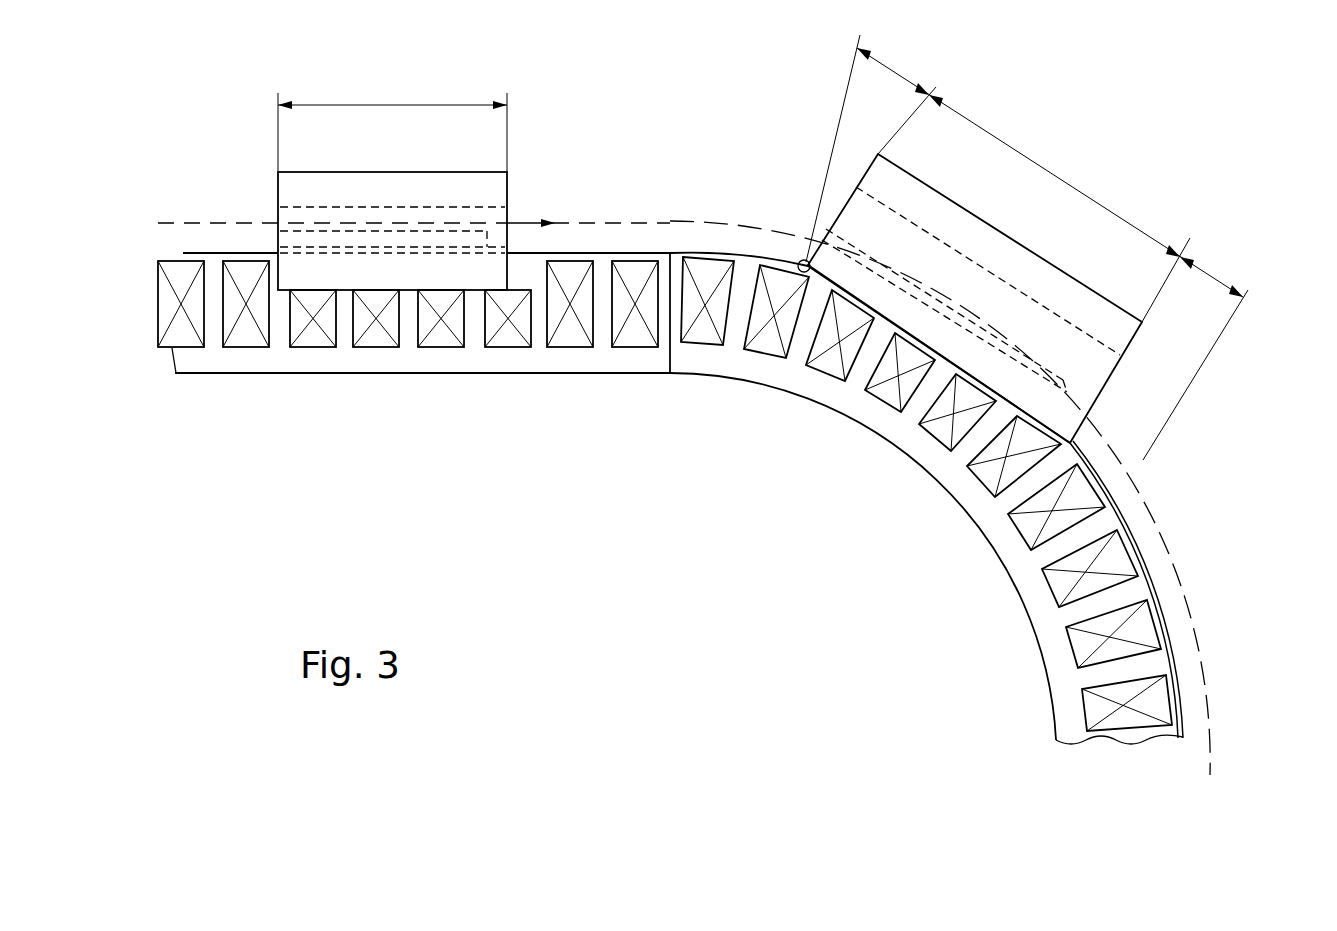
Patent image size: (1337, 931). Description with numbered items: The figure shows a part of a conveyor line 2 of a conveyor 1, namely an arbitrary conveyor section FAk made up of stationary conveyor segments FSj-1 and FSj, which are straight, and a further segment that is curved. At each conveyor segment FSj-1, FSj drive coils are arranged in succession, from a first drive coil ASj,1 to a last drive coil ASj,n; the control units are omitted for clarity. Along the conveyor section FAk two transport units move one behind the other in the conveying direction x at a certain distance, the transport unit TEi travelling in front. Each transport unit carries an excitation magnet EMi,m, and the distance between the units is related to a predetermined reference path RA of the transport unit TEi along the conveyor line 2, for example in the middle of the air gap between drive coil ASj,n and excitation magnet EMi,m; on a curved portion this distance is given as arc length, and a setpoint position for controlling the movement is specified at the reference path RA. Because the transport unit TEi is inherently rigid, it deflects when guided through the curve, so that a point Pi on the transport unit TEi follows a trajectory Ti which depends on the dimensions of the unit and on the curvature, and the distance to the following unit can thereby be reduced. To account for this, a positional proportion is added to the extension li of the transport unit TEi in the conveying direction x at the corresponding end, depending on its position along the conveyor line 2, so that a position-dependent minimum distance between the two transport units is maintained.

The conveyor 1 is at (1205, 140).
The conveyor line 2 is at (1183, 600).
The conveyor section FAk is at (223, 374).
The conveyor segment FSj-1 is at (212, 253).
The conveyor segment FSj is at (480, 300).
The drive coil ASj,1 is at (310, 347).
The drive coil ASj,n is at (637, 347).
The reference path RA is at (1172, 712).
The transport unit TEi is at (988, 247).
The excitation magnet EMi,m is at (850, 250).
The extension li is at (1027, 247).
The point Pi is at (799, 260).
The trajectory Ti is at (414, 183).
The conveying direction x is at (531, 208).